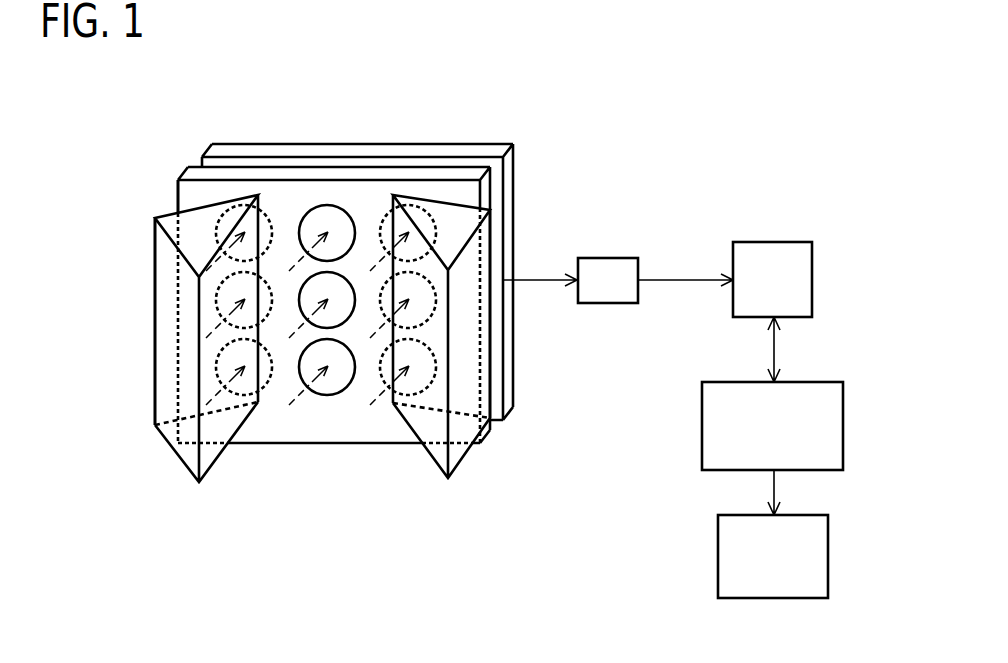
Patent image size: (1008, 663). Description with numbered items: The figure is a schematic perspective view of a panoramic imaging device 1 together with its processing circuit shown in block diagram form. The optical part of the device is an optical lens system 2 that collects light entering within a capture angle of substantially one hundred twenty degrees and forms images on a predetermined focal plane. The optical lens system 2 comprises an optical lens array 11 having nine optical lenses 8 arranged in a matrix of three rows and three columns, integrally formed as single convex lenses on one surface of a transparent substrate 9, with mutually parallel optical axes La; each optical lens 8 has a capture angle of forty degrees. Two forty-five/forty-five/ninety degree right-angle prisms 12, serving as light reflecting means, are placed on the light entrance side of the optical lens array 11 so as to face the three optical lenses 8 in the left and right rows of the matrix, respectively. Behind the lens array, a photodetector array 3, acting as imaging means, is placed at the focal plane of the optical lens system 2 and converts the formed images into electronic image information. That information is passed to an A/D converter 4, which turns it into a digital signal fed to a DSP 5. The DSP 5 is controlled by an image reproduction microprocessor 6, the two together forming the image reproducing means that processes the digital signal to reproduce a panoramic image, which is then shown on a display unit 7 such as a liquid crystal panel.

The panoramic imaging device 1 is at (356, 65).
The optical lens system 2 is at (116, 320).
The photodetector array 3 is at (213, 150).
The A/D converter 4 is at (605, 258).
The DSP 5 is at (773, 250).
The image reproduction microprocessor 6 is at (818, 415).
The display unit 7 is at (813, 575).
The optical lens 8 is at (337, 218).
The transparent substrate 9 is at (170, 202).
The optical lens array 11 is at (190, 189).
The right-angle prism 12 is at (170, 358).
The optical axis La is at (293, 403).